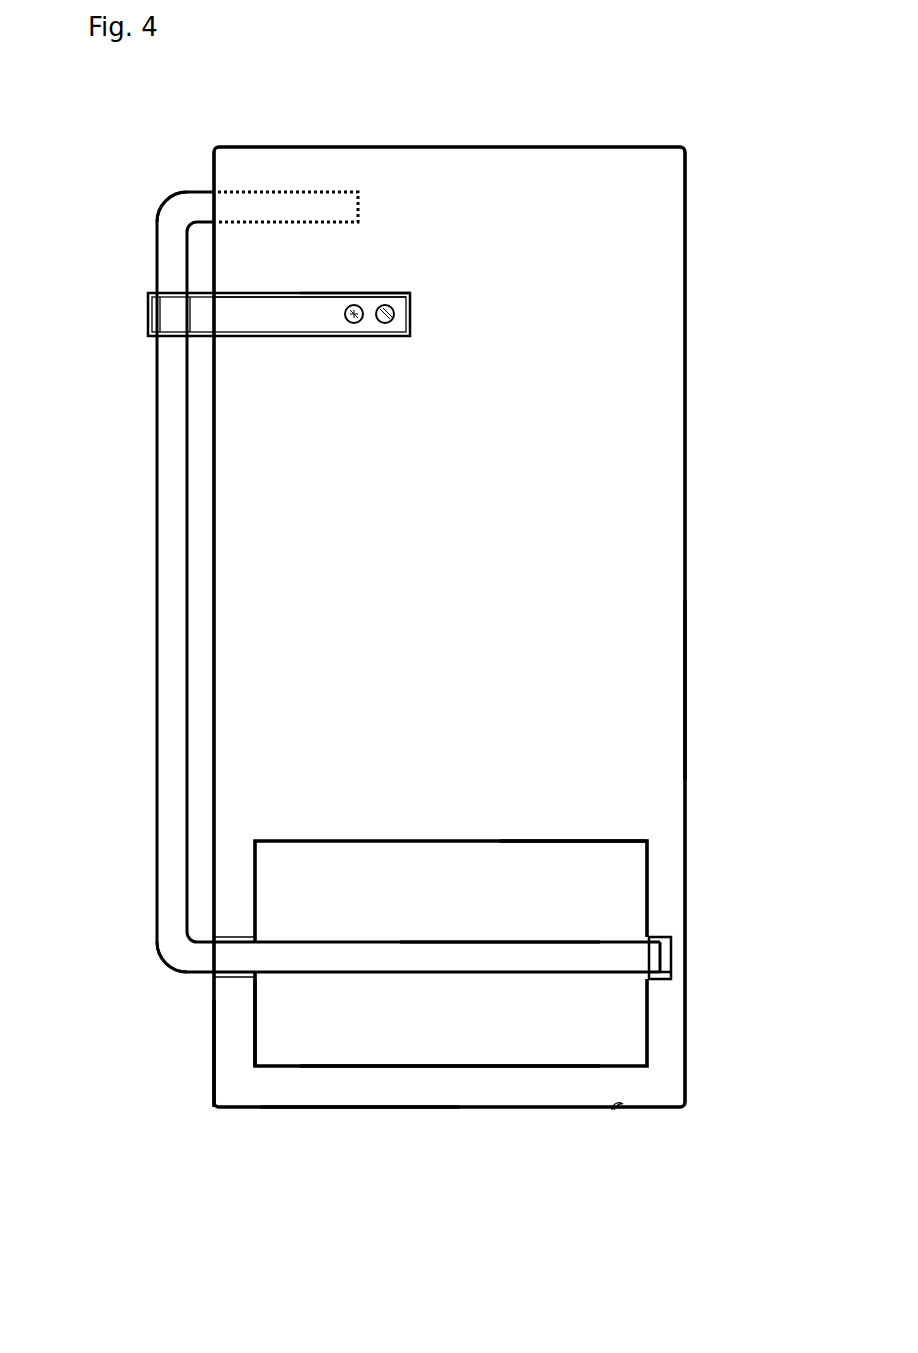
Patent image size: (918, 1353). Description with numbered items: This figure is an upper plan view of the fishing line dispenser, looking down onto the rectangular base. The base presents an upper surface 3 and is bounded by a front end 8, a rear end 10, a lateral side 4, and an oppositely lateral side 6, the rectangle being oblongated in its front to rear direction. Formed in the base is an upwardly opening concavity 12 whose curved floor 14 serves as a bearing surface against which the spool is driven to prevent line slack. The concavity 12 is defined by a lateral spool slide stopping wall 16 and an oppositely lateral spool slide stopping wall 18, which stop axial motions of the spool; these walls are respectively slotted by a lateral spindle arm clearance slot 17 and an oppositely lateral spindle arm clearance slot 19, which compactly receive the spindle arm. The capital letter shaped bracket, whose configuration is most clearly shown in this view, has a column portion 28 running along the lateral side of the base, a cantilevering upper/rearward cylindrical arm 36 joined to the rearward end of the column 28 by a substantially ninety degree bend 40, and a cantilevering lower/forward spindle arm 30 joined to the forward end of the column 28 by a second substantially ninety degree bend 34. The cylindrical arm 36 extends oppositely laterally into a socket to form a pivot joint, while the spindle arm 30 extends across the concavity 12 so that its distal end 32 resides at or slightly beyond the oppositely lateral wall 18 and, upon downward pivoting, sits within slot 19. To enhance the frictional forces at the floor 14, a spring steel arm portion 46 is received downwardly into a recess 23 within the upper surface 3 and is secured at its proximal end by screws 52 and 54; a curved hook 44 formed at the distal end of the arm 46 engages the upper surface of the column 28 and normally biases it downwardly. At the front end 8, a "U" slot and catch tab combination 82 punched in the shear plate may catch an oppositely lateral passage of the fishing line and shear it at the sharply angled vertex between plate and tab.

The upper surface 3 is at (550, 564).
The lateral side 4 is at (213, 1058).
The oppositely lateral side 6 is at (685, 688).
The front end 8 is at (343, 1108).
The rear end 10 is at (523, 147).
The upwardly opening concavity 12 is at (451, 953).
The curved floor 14 is at (425, 1043).
The lateral spool slide stopping wall 16 is at (257, 1026).
The lateral spindle arm clearance slot 17 is at (230, 975).
The oppositely lateral spool slide stopping wall 18 is at (647, 880).
The oppositely lateral spindle arm clearance slot 19 is at (667, 972).
The recess 23 is at (390, 290).
The column portion 28 is at (165, 527).
The spindle arm 30 is at (505, 963).
The distal end 32 is at (667, 953).
The second substantially 90° bend 34 is at (178, 950).
The cylindrical arm 36 is at (300, 206).
The substantially 90° bend 40 is at (175, 212).
The curved hook 44 is at (160, 315).
The spring steel arm portion 46 is at (270, 320).
The screw 52 is at (385, 323).
The screw 54 is at (354, 323).
The "U" slot and catch tab combination 82 is at (617, 1107).